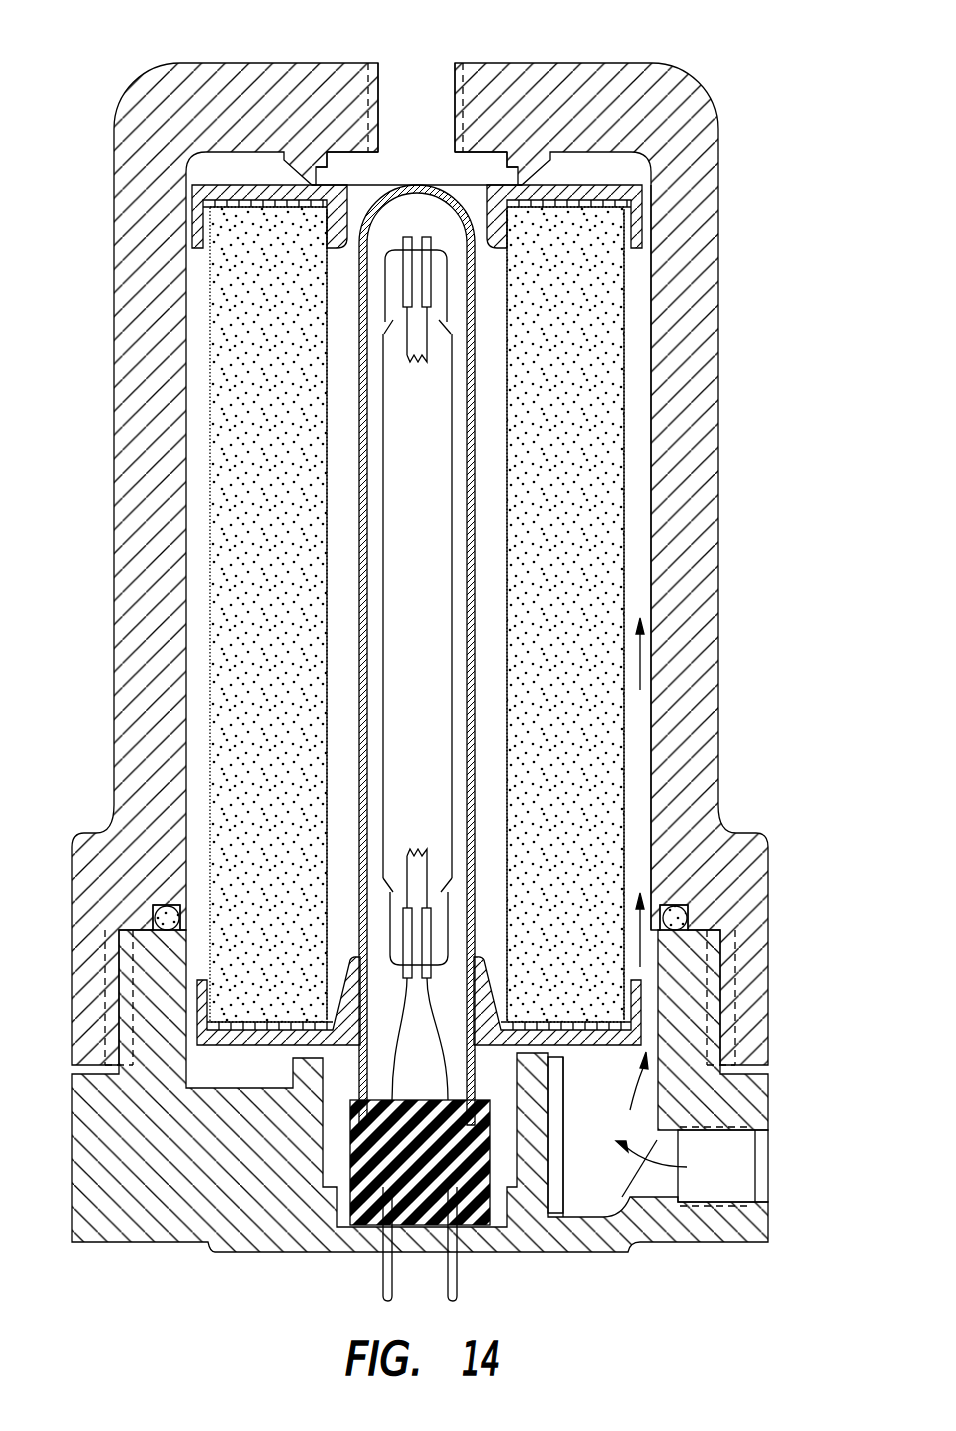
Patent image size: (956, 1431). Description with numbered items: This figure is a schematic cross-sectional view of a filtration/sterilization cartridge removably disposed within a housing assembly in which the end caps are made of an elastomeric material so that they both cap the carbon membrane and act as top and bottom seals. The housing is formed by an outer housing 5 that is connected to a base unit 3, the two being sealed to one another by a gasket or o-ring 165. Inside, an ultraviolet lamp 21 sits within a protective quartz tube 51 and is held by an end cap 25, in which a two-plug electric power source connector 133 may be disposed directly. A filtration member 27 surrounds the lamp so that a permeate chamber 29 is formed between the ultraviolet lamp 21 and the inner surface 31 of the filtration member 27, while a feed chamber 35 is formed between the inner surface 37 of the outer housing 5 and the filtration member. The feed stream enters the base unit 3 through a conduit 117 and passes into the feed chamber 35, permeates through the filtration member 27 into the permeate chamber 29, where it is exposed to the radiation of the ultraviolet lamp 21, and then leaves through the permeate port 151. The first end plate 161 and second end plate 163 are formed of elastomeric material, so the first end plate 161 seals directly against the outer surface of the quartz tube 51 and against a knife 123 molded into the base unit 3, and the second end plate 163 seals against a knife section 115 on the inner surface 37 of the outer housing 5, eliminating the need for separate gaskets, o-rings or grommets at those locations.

The base unit 3 is at (113, 1242).
The outer housing 5 is at (720, 258).
The ultraviolet lamp 21 is at (450, 543).
The end cap 25 is at (368, 1227).
The filtration member 27 is at (228, 580).
The permeate chamber 29 is at (350, 290).
The inner surface of filtration member 31 is at (329, 535).
The feed chamber 35 is at (637, 458).
The inner surface of outer housing 37 is at (652, 368).
The protective quartz tube 51 is at (475, 343).
The knife section 115 is at (313, 185).
The conduit 117 is at (740, 1155).
The knife 123 is at (565, 1048).
The two-plug electric power source connector 133 is at (460, 1278).
The permeate port 151 is at (437, 91).
The first end plate 161 is at (225, 1045).
The second end plate 163 is at (275, 185).
The o-ring 165 is at (183, 915).